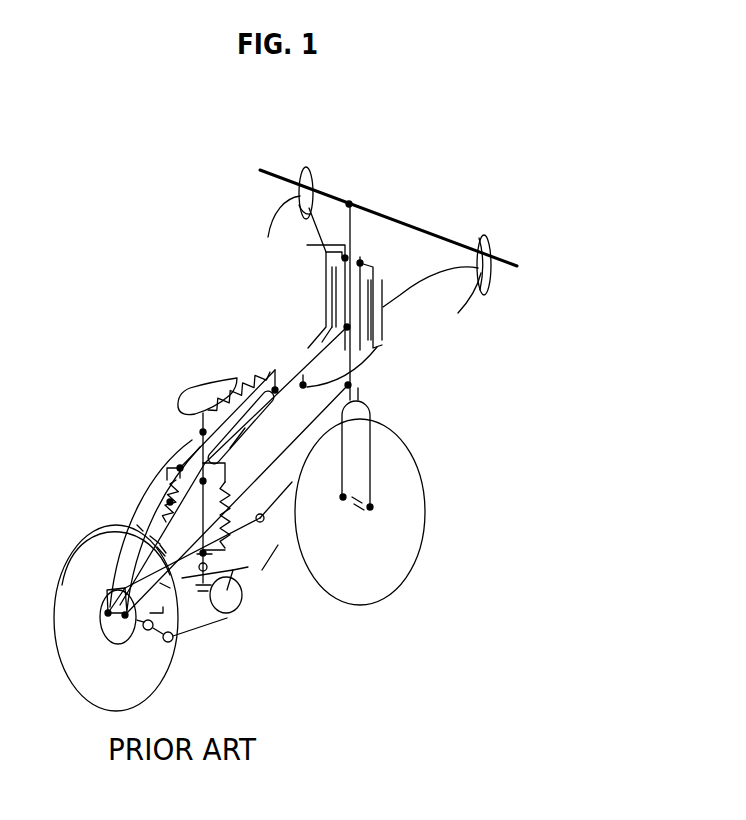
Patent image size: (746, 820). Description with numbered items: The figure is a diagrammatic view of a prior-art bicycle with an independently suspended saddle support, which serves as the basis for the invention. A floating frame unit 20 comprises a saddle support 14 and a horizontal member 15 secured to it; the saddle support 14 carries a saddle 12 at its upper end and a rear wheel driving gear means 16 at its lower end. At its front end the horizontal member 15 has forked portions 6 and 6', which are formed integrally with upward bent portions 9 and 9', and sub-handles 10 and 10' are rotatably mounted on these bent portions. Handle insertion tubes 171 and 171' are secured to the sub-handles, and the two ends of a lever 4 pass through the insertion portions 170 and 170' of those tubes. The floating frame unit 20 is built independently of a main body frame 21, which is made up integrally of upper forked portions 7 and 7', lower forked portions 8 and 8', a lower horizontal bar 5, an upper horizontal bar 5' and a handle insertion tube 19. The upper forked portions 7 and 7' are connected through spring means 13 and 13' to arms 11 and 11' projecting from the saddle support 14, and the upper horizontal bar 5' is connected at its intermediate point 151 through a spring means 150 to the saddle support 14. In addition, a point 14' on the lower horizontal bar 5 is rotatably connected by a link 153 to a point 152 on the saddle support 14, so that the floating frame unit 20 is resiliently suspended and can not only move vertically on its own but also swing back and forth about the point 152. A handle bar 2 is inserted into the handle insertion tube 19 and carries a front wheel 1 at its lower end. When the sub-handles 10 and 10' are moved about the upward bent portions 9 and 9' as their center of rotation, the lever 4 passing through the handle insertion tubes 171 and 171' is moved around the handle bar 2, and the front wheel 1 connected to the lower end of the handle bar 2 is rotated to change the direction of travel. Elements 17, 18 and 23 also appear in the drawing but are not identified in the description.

The front wheel 1 is at (425, 525).
The handle bar 2 is at (352, 225).
The lever 4 is at (408, 226).
The lower horizontal bar 5 is at (234, 471).
The upper horizontal bar 5' is at (230, 387).
The forked portion 6 is at (364, 380).
The forked portion 6' is at (306, 317).
The upper forked portion 7 is at (253, 431).
The upper forked portion 7' is at (172, 425).
The lower forked portion 8 is at (127, 618).
The lower forked portion 8' is at (107, 556).
The upward bent portion 9 is at (404, 324).
The upward bent portion 9' is at (308, 305).
The sub-handle 10 is at (434, 315).
The sub-handle 10' is at (317, 252).
The arm 11 is at (155, 470).
The arm 11' is at (145, 508).
The saddle 12 is at (192, 385).
The spring means 13 is at (208, 544).
The spring means 13' is at (136, 525).
The saddle support 14 is at (158, 426).
The point on lower horizontal bar 14' is at (268, 535).
The horizontal member 15 is at (302, 382).
The rear wheel driving gear means 16 is at (224, 615).
The grip end 17 is at (493, 242).
The bracket 18 is at (307, 245).
The handle insertion tube 19 is at (362, 264).
The floating frame unit 20 is at (238, 445).
The main body frame 21 is at (296, 436).
The spring housing 23 is at (203, 481).
The spring means 150 is at (240, 375).
The intermediate point 151 is at (270, 372).
The point on saddle support 152 is at (232, 603).
The link 153 is at (262, 570).
The insertion portion 170 is at (507, 303).
The insertion portion 170' is at (273, 170).
The handle insertion tube 171 is at (513, 244).
The handle insertion tube 171' is at (329, 173).